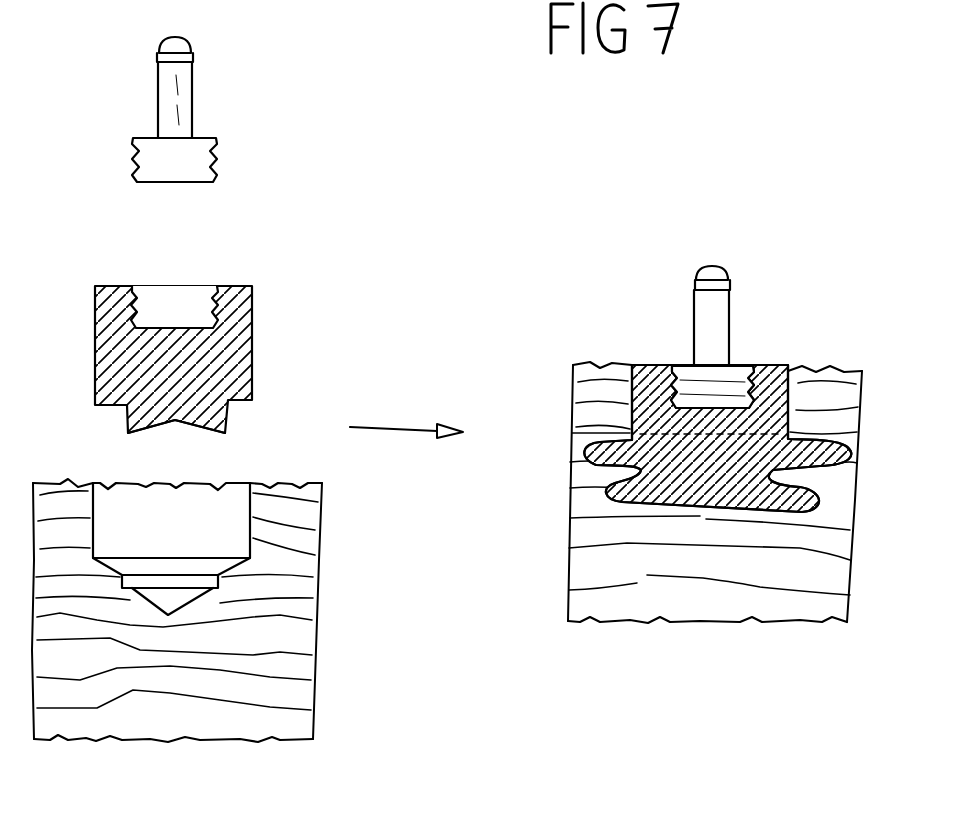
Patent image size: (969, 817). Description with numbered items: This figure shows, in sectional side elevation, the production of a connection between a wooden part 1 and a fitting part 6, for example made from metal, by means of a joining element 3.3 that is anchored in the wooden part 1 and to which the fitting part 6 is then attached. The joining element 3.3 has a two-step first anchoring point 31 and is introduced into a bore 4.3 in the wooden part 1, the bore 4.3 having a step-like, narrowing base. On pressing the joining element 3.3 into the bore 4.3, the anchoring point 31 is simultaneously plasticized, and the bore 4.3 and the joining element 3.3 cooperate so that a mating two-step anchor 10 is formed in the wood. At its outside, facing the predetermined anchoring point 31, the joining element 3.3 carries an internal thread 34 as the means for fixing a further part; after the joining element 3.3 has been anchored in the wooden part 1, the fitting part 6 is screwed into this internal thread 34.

The wooden part 1 is at (336, 667).
The joining element 3.3 is at (262, 343).
The bore 4.3 is at (190, 548).
The fitting part 6 is at (212, 113).
The anchor 10 is at (702, 509).
The first anchoring point 31 is at (232, 417).
The internal thread 34 is at (204, 310).